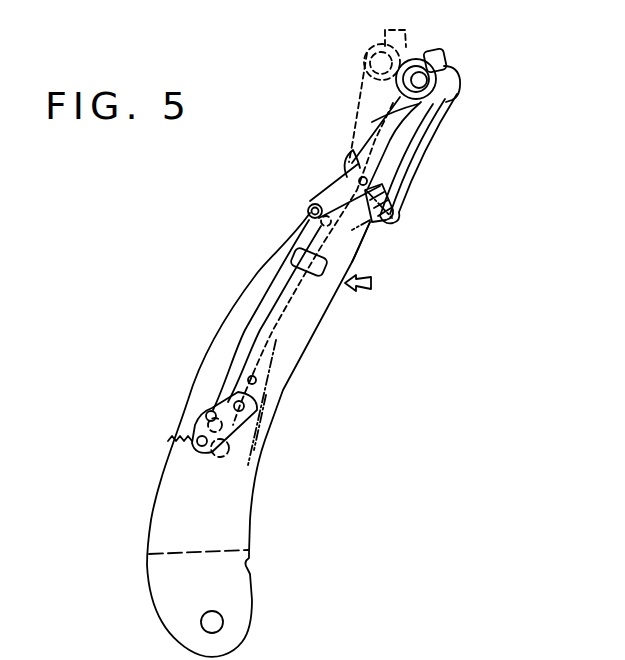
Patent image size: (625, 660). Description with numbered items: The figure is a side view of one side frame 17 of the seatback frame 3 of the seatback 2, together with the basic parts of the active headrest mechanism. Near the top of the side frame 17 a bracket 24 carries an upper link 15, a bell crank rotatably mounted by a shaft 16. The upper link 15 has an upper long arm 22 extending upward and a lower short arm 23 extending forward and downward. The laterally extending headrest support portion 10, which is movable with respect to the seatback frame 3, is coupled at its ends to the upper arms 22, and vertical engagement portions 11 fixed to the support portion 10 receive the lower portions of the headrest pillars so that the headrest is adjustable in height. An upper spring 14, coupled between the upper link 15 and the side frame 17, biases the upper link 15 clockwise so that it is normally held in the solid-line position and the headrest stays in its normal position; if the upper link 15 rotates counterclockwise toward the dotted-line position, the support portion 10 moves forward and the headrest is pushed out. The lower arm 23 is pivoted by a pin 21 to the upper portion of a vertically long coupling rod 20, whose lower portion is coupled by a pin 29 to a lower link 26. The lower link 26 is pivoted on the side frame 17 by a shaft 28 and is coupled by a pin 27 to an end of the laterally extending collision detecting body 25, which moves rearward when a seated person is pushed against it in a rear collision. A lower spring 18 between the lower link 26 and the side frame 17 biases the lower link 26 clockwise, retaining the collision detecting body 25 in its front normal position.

The seatback 2 is at (364, 284).
The seatback frame 3 is at (311, 344).
The headrest support portion 10 is at (380, 62).
The vertical engagement portion 11 is at (388, 38).
The upper spring 14 is at (385, 214).
The upper link 15 is at (406, 152).
The shaft 16 is at (395, 202).
The side frame 17 is at (342, 247).
The lower spring 18 is at (180, 436).
The coupling rod 20 is at (290, 251).
The pin 21 is at (309, 207).
The upper arm 22 is at (429, 118).
The lower arm 23 is at (345, 193).
The bracket 24 is at (412, 185).
The collision detecting body 25 is at (250, 456).
The lower link 26 is at (258, 393).
The pin 27 is at (196, 446).
The shaft 28 is at (233, 401).
The pin 29 is at (205, 414).